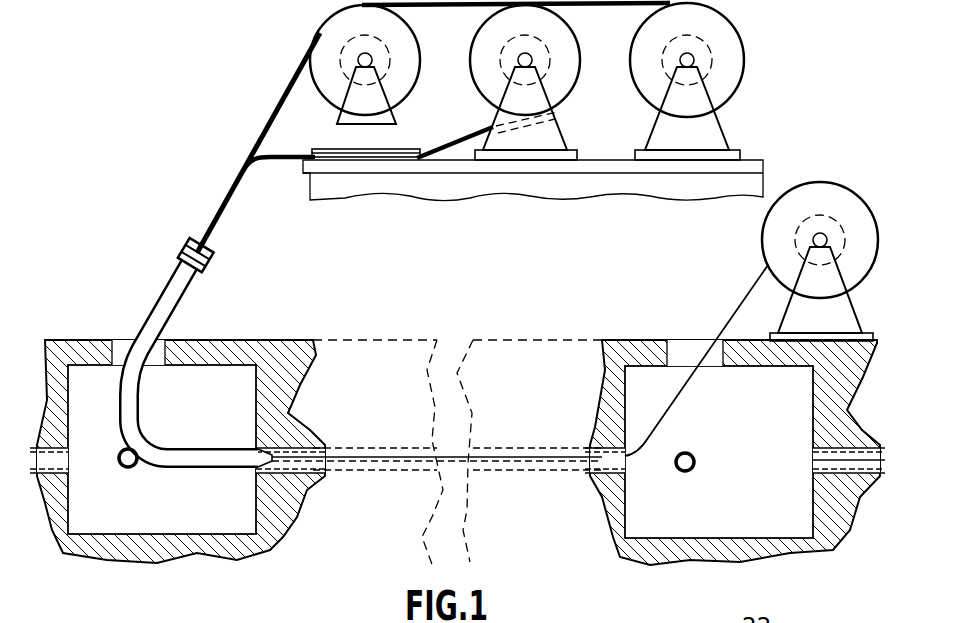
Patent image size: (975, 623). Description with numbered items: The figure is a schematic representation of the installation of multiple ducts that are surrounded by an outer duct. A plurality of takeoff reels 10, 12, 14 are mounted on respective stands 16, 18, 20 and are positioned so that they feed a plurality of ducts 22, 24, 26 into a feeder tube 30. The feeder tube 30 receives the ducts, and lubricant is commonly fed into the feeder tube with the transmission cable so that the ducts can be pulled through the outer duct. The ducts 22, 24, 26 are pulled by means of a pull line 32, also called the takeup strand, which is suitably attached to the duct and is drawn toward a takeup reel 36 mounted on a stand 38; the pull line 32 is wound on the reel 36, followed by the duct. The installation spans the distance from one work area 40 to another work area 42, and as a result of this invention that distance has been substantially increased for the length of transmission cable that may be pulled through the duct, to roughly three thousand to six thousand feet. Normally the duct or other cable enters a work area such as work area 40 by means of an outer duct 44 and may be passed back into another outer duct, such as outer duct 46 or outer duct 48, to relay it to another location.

The takeoff reel 10 is at (405, 57).
The takeoff reel 12 is at (570, 60).
The takeoff reel 14 is at (727, 58).
The stand 16 is at (387, 118).
The stand 18 is at (538, 138).
The stand 20 is at (700, 137).
The duct 22 is at (262, 125).
The duct 24 is at (443, 152).
The duct 26 is at (577, 7).
The feeder tube 30 is at (163, 303).
The pull line 32 is at (366, 464).
The takeup reel 36 is at (847, 203).
The stand 38 is at (837, 314).
The work area 40 is at (211, 415).
The work area 42 is at (769, 415).
The outer duct 44 is at (130, 470).
The outer duct 46 is at (694, 470).
The outer duct 48 is at (857, 468).